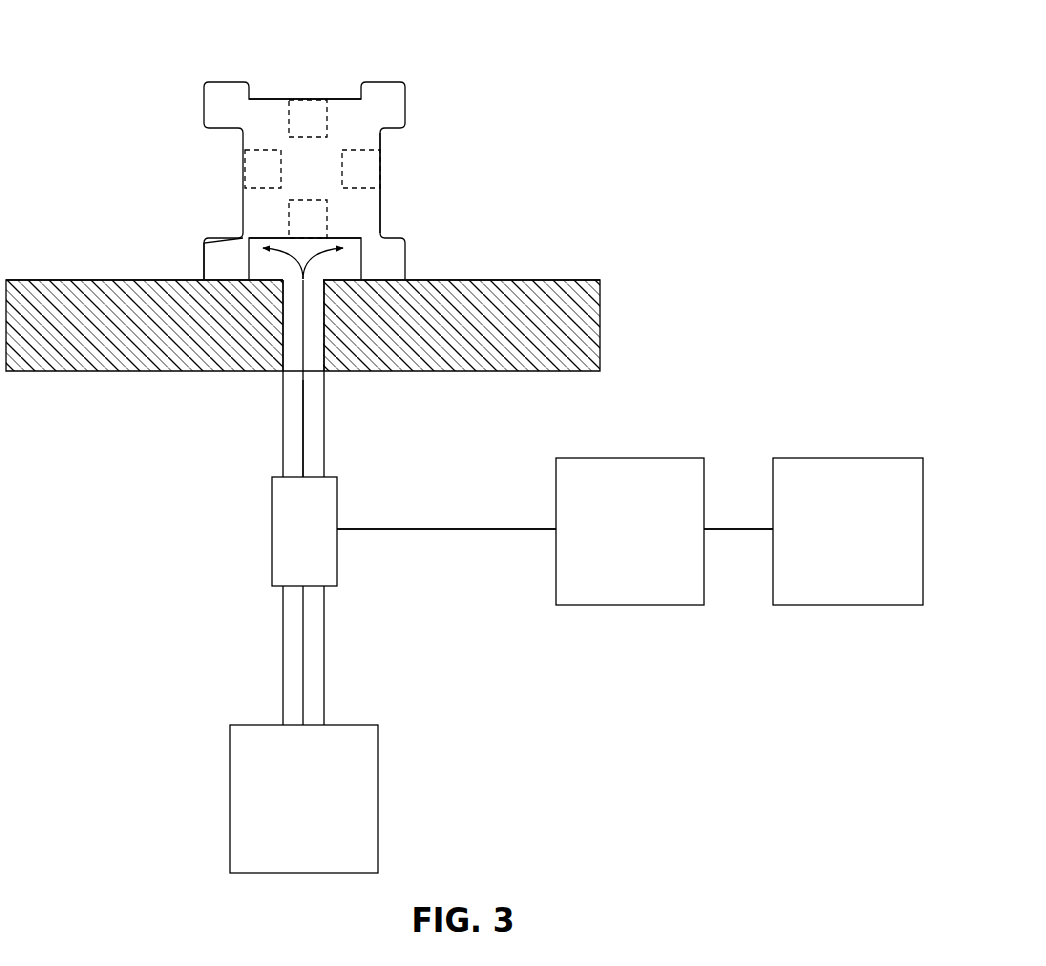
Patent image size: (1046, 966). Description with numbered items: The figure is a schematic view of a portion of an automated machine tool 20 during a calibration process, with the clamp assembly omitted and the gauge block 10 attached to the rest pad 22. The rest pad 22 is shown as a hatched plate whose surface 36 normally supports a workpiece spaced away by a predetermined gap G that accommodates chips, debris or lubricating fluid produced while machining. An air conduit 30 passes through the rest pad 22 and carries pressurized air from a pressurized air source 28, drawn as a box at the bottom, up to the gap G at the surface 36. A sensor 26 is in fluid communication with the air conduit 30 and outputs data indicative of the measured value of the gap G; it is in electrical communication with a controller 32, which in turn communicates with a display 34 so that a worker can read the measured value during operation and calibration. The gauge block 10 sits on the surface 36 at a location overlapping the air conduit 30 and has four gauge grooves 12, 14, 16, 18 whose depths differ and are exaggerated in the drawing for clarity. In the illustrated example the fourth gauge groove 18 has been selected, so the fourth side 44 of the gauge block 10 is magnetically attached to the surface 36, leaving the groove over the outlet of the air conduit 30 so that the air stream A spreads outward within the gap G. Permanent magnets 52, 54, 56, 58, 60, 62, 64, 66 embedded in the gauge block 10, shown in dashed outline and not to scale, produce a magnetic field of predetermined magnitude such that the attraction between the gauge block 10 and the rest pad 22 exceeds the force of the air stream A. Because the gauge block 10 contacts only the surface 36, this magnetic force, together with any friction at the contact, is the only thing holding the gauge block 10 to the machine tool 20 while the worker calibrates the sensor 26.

The gauge block 10 is at (311, 151).
The gauge groove 12 is at (234, 217).
The gauge groove 14 is at (340, 90).
The gauge groove 16 is at (390, 145).
The fourth gauge groove 18 is at (238, 260).
The automated machine tool 20 is at (654, 684).
The rest pad 22 is at (603, 330).
The sensor 26 is at (272, 540).
The pressurized air source 28 is at (230, 803).
The air conduit 30 is at (283, 659).
The controller 32 is at (640, 458).
The display 34 is at (865, 458).
The surface 36 is at (552, 280).
The fourth side 44 is at (380, 280).
The permanent magnet 52 is at (214, 169).
The permanent magnet 54 is at (248, 160).
The permanent magnet 56 is at (296, 95).
The permanent magnet 58 is at (313, 103).
The permanent magnet 60 is at (408, 169).
The permanent magnet 62 is at (372, 170).
The permanent magnet 64 is at (370, 217).
The permanent magnet 66 is at (320, 217).
The gap G is at (357, 263).
The air stream A is at (305, 450).